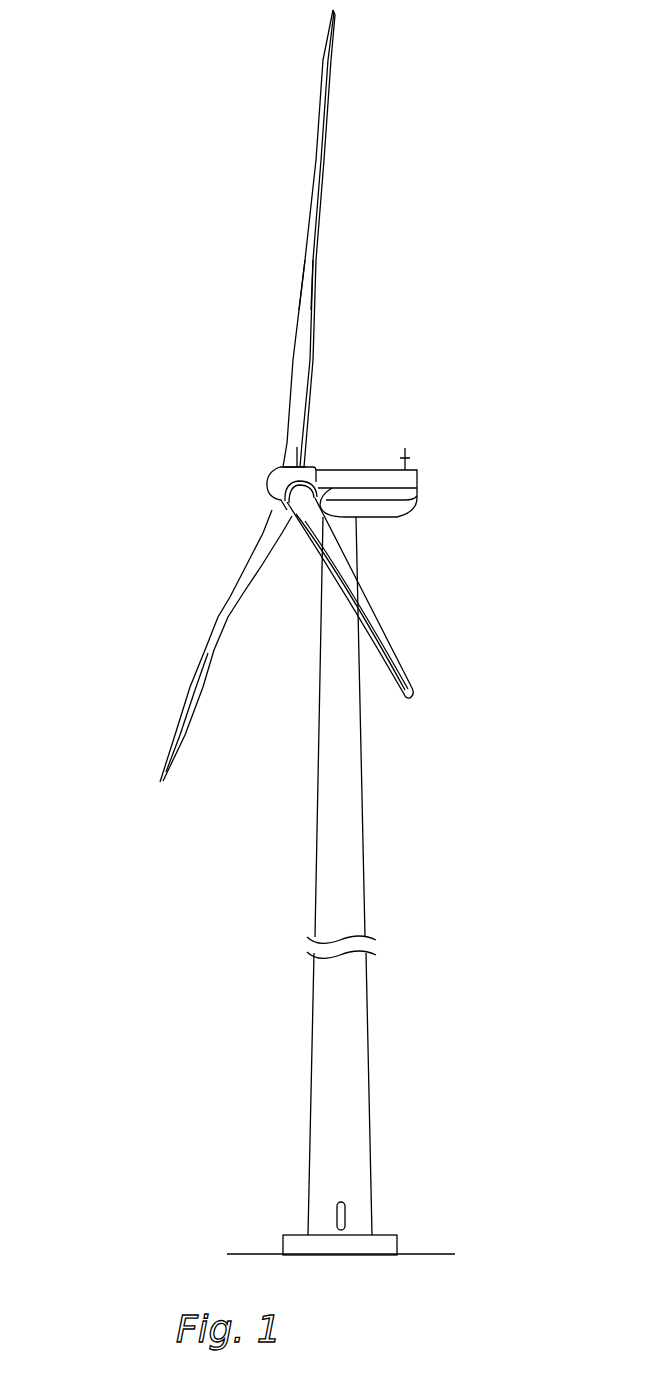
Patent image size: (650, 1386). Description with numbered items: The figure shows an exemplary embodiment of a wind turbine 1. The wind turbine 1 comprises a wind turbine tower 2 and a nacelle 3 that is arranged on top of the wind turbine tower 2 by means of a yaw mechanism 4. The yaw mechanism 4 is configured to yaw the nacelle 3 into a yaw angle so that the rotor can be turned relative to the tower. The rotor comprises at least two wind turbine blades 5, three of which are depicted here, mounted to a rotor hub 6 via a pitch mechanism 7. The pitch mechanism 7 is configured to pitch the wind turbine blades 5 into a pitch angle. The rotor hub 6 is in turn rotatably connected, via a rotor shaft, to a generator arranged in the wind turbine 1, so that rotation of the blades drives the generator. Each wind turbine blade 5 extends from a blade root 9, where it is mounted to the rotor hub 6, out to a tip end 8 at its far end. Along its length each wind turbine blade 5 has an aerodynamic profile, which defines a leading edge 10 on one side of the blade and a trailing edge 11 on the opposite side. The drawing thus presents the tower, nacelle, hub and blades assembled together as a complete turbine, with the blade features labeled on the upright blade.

The wind turbine 1 is at (128, 359).
The wind turbine tower 2 is at (362, 834).
The nacelle 3 is at (372, 478).
The yaw mechanism 4 is at (350, 520).
The wind turbine blade 5 is at (318, 206).
The rotor hub 6 is at (267, 477).
The pitch mechanism 7 is at (318, 464).
The tip end 8 is at (336, 13).
The blade root 9 is at (292, 462).
The leading edge 10 is at (296, 346).
The trailing edge 11 is at (315, 368).